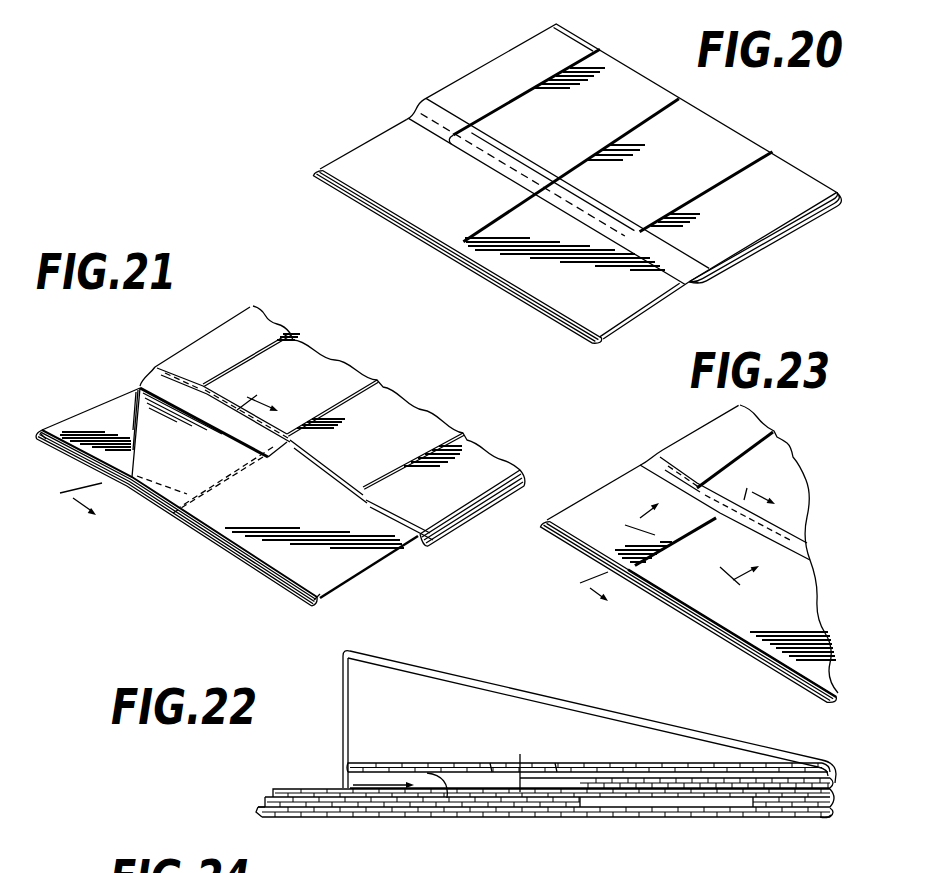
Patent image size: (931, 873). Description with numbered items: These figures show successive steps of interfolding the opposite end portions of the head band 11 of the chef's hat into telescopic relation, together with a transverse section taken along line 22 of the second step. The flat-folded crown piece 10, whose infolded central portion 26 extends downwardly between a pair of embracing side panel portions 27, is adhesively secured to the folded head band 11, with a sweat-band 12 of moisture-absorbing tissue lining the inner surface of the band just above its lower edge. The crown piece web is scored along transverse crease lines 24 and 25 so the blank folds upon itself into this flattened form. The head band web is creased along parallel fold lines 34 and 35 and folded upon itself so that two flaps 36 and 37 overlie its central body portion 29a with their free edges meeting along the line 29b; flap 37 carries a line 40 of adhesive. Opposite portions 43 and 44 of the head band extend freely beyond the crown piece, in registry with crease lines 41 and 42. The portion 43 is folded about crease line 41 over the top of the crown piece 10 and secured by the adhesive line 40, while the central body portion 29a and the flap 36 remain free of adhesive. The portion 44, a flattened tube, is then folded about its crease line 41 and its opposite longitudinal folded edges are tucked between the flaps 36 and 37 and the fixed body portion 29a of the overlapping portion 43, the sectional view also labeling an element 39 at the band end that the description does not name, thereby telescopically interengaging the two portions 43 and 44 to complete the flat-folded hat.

In FIG. 20, the crown piece 10 is at (508, 53).
In FIG. 21, the crown piece 10 is at (214, 331).
In FIG. 23, the crown piece 10 is at (712, 419).
In FIG. 22, the crown piece 10 is at (280, 789).
In FIG. 20, the head band 11 is at (362, 140).
In FIG. 21, the head band 11 is at (92, 392).
In FIG. 23, the head band 11 is at (605, 482).
In FIG. 22, the head band 11 is at (688, 824).
In FIG. 20, the sweat-band 12 is at (554, 310).
In FIG. 21, the sweat-band 12 is at (270, 574).
In FIG. 23, the sweat-band 12 is at (778, 665).
In FIG. 22, the sweat-band 12 is at (838, 782).
In FIG. 21, the section line 22— 22 is at (178, 464).
In FIG. 23, the crease line 24 is at (685, 555).
In FIG. 23, the crease line 25 is at (704, 537).
In FIG. 20, the central portion 26 is at (743, 258).
In FIG. 21, the central portion 26 is at (470, 508).
In FIG. 20, the side panel portions 27 is at (712, 153).
In FIG. 21, the side panel portions 27 is at (413, 428).
In FIG. 22, the central body portion 29a is at (557, 763).
In FIG. 22, the line of meeting free edges 29b is at (492, 765).
In FIG. 22, the fold line 34 is at (350, 810).
In FIG. 22, the fold line 35 is at (833, 818).
In FIG. 21, the flap 36 is at (160, 390).
In FIG. 22, the flap 36 is at (343, 722).
In FIG. 22, the flap 37 is at (612, 795).
In FIG. 22, the end fold 39 is at (795, 775).
In FIG. 22, the line of adhesive 40 is at (517, 840).
In FIG. 21, the crease line 41 is at (40, 441).
In FIG. 21, the crease line 42 is at (318, 598).
In FIG. 20, the freely extending portion 43 is at (565, 269).
In FIG. 21, the freely extending portion 43 is at (322, 528).
In FIG. 23, the freely extending portion 43 is at (793, 626).
In FIG. 22, the freely extending portion 43 is at (513, 686).
In FIG. 20, the freely extending portion 44 is at (552, 170).
In FIG. 21, the freely extending portion 44 is at (88, 411).
In FIG. 23, the freely extending portion 44 is at (652, 531).
In FIG. 22, the freely extending portion 44 is at (407, 763).